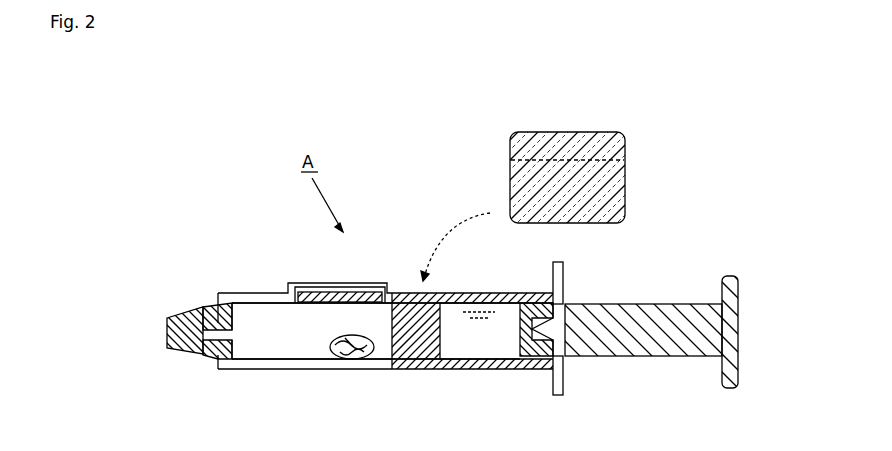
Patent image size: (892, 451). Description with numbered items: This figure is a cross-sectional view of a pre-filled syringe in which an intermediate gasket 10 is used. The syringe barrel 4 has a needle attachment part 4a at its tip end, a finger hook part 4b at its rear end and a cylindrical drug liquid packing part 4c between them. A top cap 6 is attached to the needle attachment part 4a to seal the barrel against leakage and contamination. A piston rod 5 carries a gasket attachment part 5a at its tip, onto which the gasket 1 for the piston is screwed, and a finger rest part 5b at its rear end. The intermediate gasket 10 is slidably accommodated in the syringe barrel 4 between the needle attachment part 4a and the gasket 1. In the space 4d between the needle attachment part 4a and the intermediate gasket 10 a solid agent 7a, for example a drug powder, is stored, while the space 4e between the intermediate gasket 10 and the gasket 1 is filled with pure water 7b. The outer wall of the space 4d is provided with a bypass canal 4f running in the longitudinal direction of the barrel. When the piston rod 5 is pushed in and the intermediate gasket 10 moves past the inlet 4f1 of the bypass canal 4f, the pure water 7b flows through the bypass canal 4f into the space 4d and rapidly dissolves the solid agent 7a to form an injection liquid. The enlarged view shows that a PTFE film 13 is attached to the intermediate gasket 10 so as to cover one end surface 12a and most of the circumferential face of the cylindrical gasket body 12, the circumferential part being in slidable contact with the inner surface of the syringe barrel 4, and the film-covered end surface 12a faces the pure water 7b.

The gasket for syringe 1 is at (518, 360).
The syringe barrel 4 is at (255, 369).
The needle attachment part 4a is at (208, 304).
The finger hook part 4b is at (566, 272).
The drug liquid packing part 4c is at (420, 360).
The space for storage of solid agent 4d is at (279, 350).
The space 4e is at (472, 345).
The bypass canal 4f is at (320, 283).
The inlet of the bypass canal 4f1 is at (386, 291).
The piston rod 5 is at (673, 318).
The gasket attachment part 5a is at (540, 358).
The finger rest part 5b is at (739, 290).
The top cap for syringe 6 is at (172, 314).
The solid agent 7a is at (352, 360).
The pure water 7b is at (460, 347).
The intermediate gasket 10 is at (393, 363).
The gasket body 12 is at (511, 166).
The end surface 12a is at (452, 303).
The PTFE film 13 is at (511, 192).